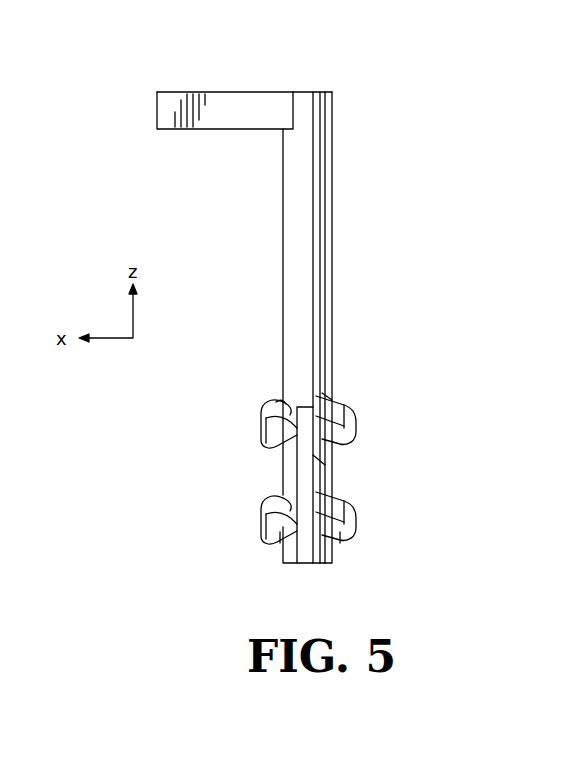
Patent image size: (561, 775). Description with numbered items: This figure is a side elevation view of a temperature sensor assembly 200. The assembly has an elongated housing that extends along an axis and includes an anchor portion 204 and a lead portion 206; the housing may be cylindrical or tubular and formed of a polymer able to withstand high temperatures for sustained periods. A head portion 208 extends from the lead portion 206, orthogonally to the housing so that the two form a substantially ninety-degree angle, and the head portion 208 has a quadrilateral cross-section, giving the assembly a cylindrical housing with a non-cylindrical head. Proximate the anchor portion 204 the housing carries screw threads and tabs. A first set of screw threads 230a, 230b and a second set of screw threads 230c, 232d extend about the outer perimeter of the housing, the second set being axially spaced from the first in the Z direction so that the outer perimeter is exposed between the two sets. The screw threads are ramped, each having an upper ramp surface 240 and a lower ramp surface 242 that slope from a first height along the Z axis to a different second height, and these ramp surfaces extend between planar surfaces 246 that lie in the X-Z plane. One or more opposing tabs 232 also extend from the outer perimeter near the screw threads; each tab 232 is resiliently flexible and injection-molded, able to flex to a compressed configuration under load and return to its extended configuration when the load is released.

The temperature sensor assembly 200 is at (162, 52).
The anchor portion 204 is at (284, 485).
The lead portion 206 is at (334, 270).
The head portion 208 is at (233, 130).
The screw thread 230a is at (262, 410).
The screw thread 230b is at (357, 418).
The screw thread 230c is at (262, 508).
The fourth clamp band 232d is at (357, 521).
The tab 232 is at (330, 472).
The upper ramp surface 240 is at (278, 400).
The lower ramp surface 242 is at (340, 542).
The planar surface 246 is at (337, 400).